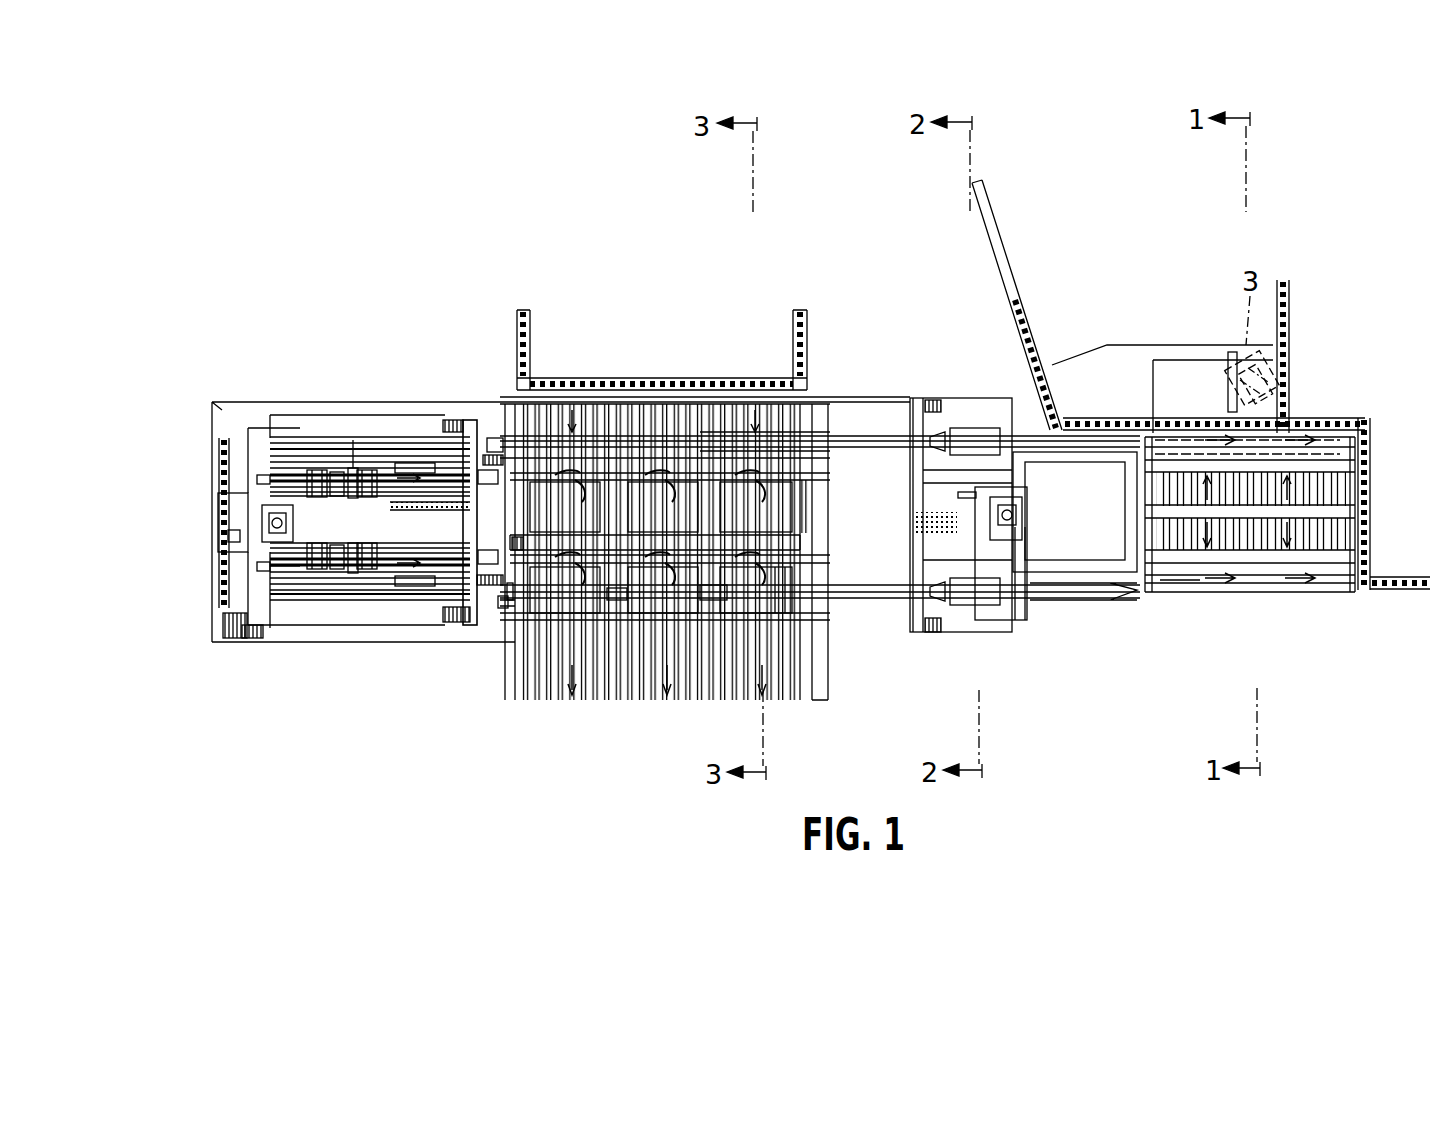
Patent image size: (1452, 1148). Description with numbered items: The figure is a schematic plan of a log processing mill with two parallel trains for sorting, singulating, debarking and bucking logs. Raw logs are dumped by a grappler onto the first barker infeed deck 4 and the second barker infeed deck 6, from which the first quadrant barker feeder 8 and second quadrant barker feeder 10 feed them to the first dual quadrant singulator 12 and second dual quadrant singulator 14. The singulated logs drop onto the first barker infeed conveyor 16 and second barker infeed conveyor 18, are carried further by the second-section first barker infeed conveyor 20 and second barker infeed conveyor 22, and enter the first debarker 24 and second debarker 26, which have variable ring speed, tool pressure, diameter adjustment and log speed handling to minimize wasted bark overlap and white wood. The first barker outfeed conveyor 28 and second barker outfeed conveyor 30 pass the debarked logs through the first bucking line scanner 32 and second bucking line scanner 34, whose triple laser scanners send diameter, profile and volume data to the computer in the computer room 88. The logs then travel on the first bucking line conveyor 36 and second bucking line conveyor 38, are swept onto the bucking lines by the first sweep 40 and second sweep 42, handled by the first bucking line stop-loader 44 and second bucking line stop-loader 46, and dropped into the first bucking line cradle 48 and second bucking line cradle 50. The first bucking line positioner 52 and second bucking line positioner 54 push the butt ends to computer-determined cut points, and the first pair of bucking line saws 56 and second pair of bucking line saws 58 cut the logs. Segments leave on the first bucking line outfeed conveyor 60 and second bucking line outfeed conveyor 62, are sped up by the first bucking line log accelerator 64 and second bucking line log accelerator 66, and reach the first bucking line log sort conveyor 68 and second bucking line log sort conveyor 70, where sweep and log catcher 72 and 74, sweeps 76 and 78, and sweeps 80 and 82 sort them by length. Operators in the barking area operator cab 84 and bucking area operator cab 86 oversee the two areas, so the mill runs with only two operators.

The first barker infeed deck 4 is at (1337, 483).
The second barker infeed deck 6 is at (1330, 540).
The first quadrant barker feeder 8 is at (1318, 463).
The second quadrant barker feeder 10 is at (1372, 592).
The first dual quadrant singulator 12 is at (1300, 440).
The second dual quadrant singulator 14 is at (1310, 580).
The first barker infeed conveyor (first section) 16 is at (1242, 442).
The second barker infeed conveyor (first section) 18 is at (1177, 580).
The first barker infeed conveyor (second section) 20 is at (1040, 432).
The second barker infeed conveyor (second section) 22 is at (1045, 600).
The first debarker 24 is at (988, 430).
The second debarker 26 is at (996, 622).
The first barker outfeed conveyor 28 is at (826, 400).
The second barker outfeed conveyor 30 is at (840, 600).
The first bucking line scanner 32 is at (497, 398).
The second bucking line scanner 34 is at (510, 602).
The first bucking line conveyor 36 is at (492, 470).
The second bucking line conveyor 38 is at (493, 595).
The first sweep 40 is at (430, 463).
The second sweep 42 is at (430, 603).
The first bucking line stop-loader 44 is at (352, 468).
The second bucking line stop-loader 46 is at (354, 576).
The first bucking line cradle 48 is at (334, 472).
The second bucking line cradle 50 is at (318, 572).
The first bucking line positioner 52 is at (255, 430).
The second bucking line positioner 54 is at (250, 600).
The first pair of bucking line saws 56 is at (316, 470).
The second pair of bucking line saws 58 is at (330, 575).
The first bucking line outfeed conveyor 60 is at (380, 470).
The second bucking line outfeed conveyor 62 is at (388, 605).
The first bucking line log accelerator 64 is at (490, 470).
The second bucking line log accelerator 66 is at (518, 340).
The first bucking line log sort conveyor 68 is at (572, 478).
The second bucking line log sort conveyor 70 is at (572, 565).
The first bucking line sweep No. 1 and log catcher 72 is at (662, 478).
The second bucking line sweep No. 1 and log catcher 74 is at (665, 565).
The first bucking line sweep No. 2 76 is at (752, 478).
The second bucking line sweep No. 2 78 is at (755, 565).
The first bucking line sweep No. 3 80 is at (760, 443).
The second bucking line sweep No. 3 82 is at (776, 565).
The barking area operator cab 84 is at (1022, 515).
The bucking area operator cab 86 is at (265, 512).
The computer room 88 is at (258, 565).